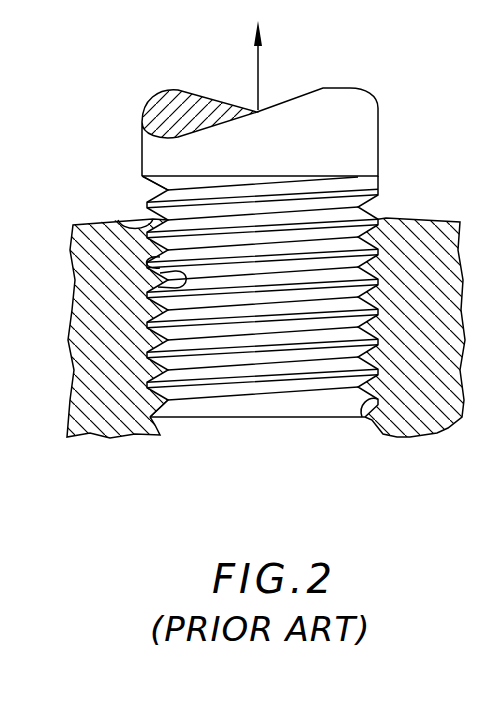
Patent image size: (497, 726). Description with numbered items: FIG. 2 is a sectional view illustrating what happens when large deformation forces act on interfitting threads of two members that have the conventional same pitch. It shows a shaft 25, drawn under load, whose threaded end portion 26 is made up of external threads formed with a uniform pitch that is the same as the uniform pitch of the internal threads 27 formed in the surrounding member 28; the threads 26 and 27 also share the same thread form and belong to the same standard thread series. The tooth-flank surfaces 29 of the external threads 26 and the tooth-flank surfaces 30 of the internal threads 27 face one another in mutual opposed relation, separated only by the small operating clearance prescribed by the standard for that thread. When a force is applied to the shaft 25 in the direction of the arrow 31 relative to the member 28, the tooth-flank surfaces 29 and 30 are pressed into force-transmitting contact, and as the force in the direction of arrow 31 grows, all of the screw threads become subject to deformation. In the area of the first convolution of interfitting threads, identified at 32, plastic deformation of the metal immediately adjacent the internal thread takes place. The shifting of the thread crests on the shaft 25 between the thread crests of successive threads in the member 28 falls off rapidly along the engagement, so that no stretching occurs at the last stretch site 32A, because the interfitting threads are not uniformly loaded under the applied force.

The shaft 25 is at (380, 150).
The threaded end portion 26 is at (243, 419).
The internal threads 27 is at (380, 407).
The member 28 is at (420, 218).
The tooth-flank surfaces 29 is at (135, 222).
The tooth-flank surfaces 30 is at (183, 285).
The arrow 31 is at (260, 66).
The first convolution of interfitting threads 32 is at (127, 196).
The last stretch site 32A is at (135, 397).